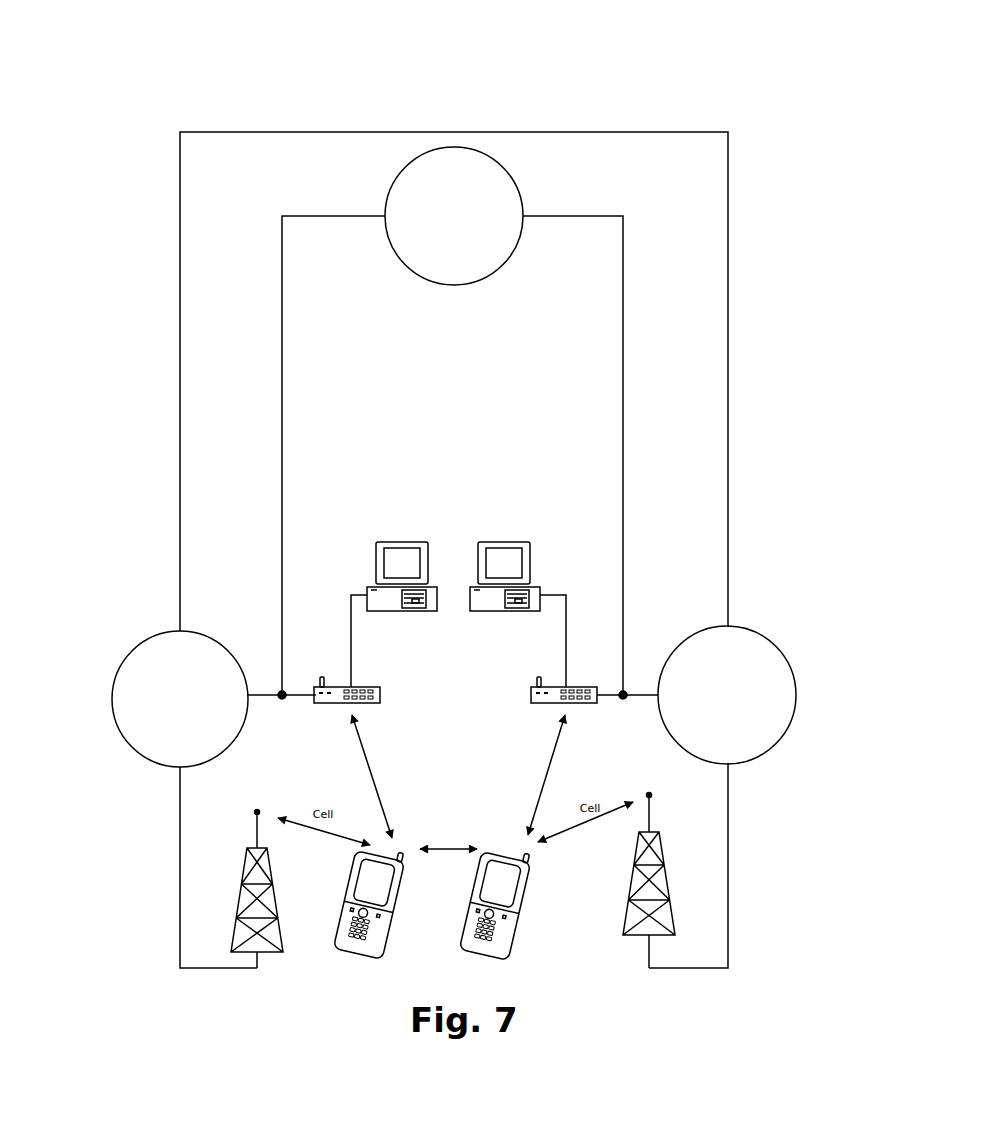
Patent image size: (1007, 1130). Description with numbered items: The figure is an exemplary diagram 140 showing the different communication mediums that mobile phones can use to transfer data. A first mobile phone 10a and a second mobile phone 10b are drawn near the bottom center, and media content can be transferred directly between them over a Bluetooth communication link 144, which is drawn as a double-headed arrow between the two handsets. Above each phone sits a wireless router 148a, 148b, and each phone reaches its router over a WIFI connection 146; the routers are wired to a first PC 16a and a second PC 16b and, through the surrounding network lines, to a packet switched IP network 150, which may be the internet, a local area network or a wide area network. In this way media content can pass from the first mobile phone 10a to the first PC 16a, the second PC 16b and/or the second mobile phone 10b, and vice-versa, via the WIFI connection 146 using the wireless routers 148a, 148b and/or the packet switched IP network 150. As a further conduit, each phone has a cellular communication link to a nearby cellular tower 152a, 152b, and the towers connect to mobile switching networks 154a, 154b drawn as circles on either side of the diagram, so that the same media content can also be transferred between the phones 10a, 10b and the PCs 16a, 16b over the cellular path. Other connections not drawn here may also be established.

The exemplary diagram 140 is at (176, 95).
The packet switched IP network 150 is at (452, 285).
The first PC 16a is at (402, 541).
The second PC 16b is at (505, 541).
The wireless router 148a is at (382, 693).
The wireless router 148b is at (531, 693).
The WIFI connection 146 is at (397, 746).
The Bluetooth communication link 144 is at (457, 799).
The first mobile phone 10a is at (395, 905).
The second mobile phone 10b is at (522, 905).
The cellular tower 152a is at (238, 883).
The cellular tower 152b is at (668, 883).
The mobile switching network 154a is at (113, 695).
The mobile switching network 154b is at (797, 692).